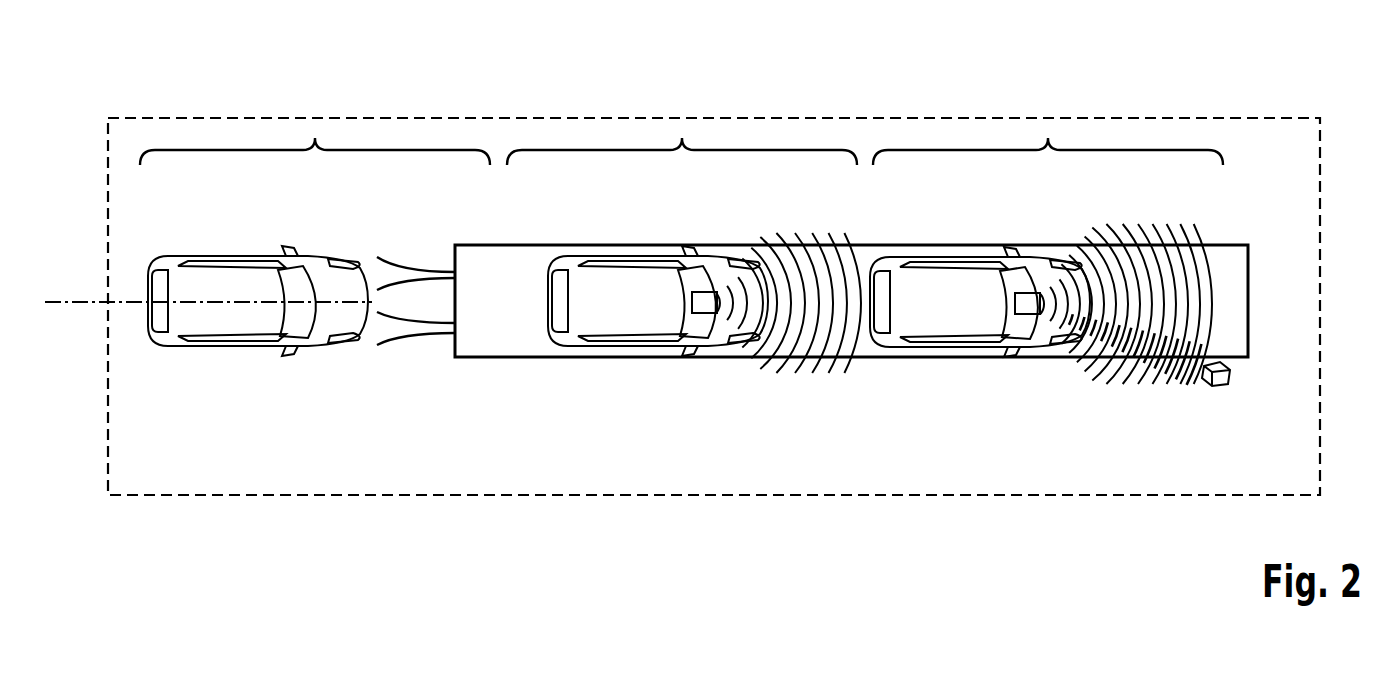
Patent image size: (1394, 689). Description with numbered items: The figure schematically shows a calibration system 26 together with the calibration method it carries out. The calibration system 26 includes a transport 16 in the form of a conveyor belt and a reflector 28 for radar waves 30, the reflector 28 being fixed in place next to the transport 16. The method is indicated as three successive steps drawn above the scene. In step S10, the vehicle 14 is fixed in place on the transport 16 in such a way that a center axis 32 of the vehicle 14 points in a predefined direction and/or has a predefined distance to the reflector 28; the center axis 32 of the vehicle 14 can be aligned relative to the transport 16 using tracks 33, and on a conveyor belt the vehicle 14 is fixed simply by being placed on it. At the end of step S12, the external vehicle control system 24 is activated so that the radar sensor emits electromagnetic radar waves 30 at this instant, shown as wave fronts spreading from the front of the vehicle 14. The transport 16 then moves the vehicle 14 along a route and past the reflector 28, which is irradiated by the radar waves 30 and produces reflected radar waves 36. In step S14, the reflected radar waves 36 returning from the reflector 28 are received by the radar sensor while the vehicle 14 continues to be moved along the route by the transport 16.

The calibration system 26 is at (1226, 74).
The vehicle fixing step S10 is at (315, 138).
The activation step S12 is at (682, 138).
The reception step S14 is at (1048, 138).
The transport 16 is at (573, 245).
The vehicle 14 is at (222, 332).
The external vehicle control system 24 is at (705, 303).
The radar waves 30 is at (860, 258).
The center axis 32 is at (55, 303).
The tracks 33 is at (396, 340).
The reflected radar waves 36 is at (1178, 366).
The reflector 28 is at (1222, 384).